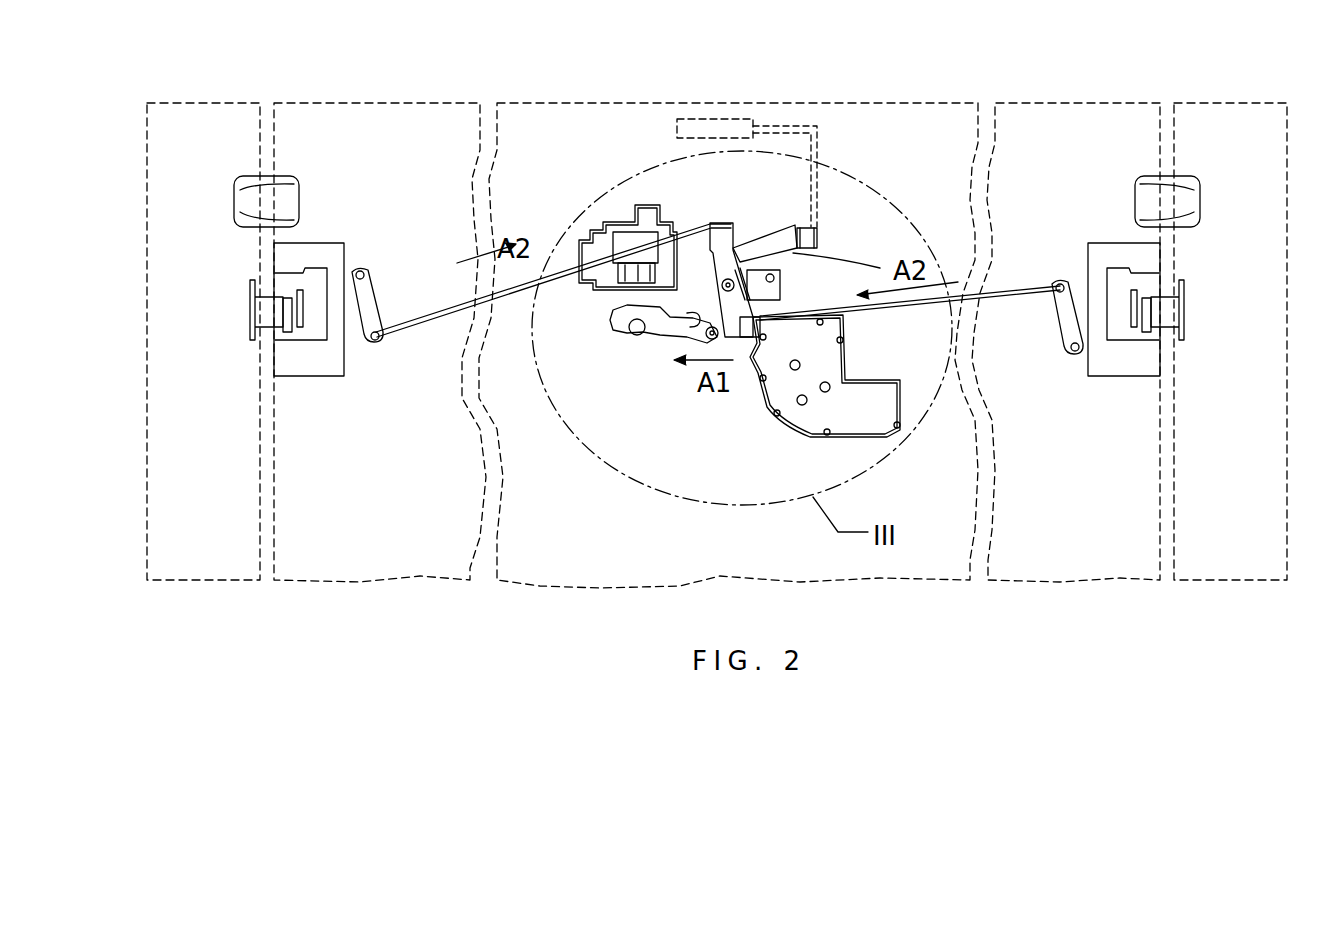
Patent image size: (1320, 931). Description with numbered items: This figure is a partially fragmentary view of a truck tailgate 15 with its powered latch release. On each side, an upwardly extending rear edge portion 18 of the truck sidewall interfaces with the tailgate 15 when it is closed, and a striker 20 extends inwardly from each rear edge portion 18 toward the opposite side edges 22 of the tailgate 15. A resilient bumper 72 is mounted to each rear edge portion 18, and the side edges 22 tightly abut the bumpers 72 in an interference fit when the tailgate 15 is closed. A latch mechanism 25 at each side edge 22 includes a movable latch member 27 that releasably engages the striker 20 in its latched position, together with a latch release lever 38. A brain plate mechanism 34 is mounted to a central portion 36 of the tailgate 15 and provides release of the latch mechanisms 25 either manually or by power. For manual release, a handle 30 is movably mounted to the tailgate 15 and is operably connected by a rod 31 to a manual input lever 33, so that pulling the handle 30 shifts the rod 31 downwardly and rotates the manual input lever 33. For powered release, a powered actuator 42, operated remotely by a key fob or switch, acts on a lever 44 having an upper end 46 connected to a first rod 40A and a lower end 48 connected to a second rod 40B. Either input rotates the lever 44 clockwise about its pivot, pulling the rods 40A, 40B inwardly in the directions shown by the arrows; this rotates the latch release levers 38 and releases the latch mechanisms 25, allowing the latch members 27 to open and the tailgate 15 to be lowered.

The tailgate 15 is at (425, 103).
The rear edge portion 18 is at (222, 118).
The striker 20 is at (268, 315).
The side edge 22 is at (268, 410).
The latch mechanism 25 is at (330, 358).
The latch member 27 is at (285, 327).
The handle 30 is at (723, 118).
The rod 31 is at (818, 137).
The manual input lever 33 is at (845, 267).
The brain plate mechanism 34 is at (878, 128).
The central portion 36 is at (818, 558).
The latch release lever 38 is at (380, 305).
The first rod 40A is at (410, 327).
The second rod 40B is at (1013, 293).
The powered actuator 42 is at (800, 423).
The lever 44 is at (737, 250).
The upper end 46 is at (717, 223).
The lower end 48 is at (742, 342).
The resilient bumper 72 is at (255, 200).